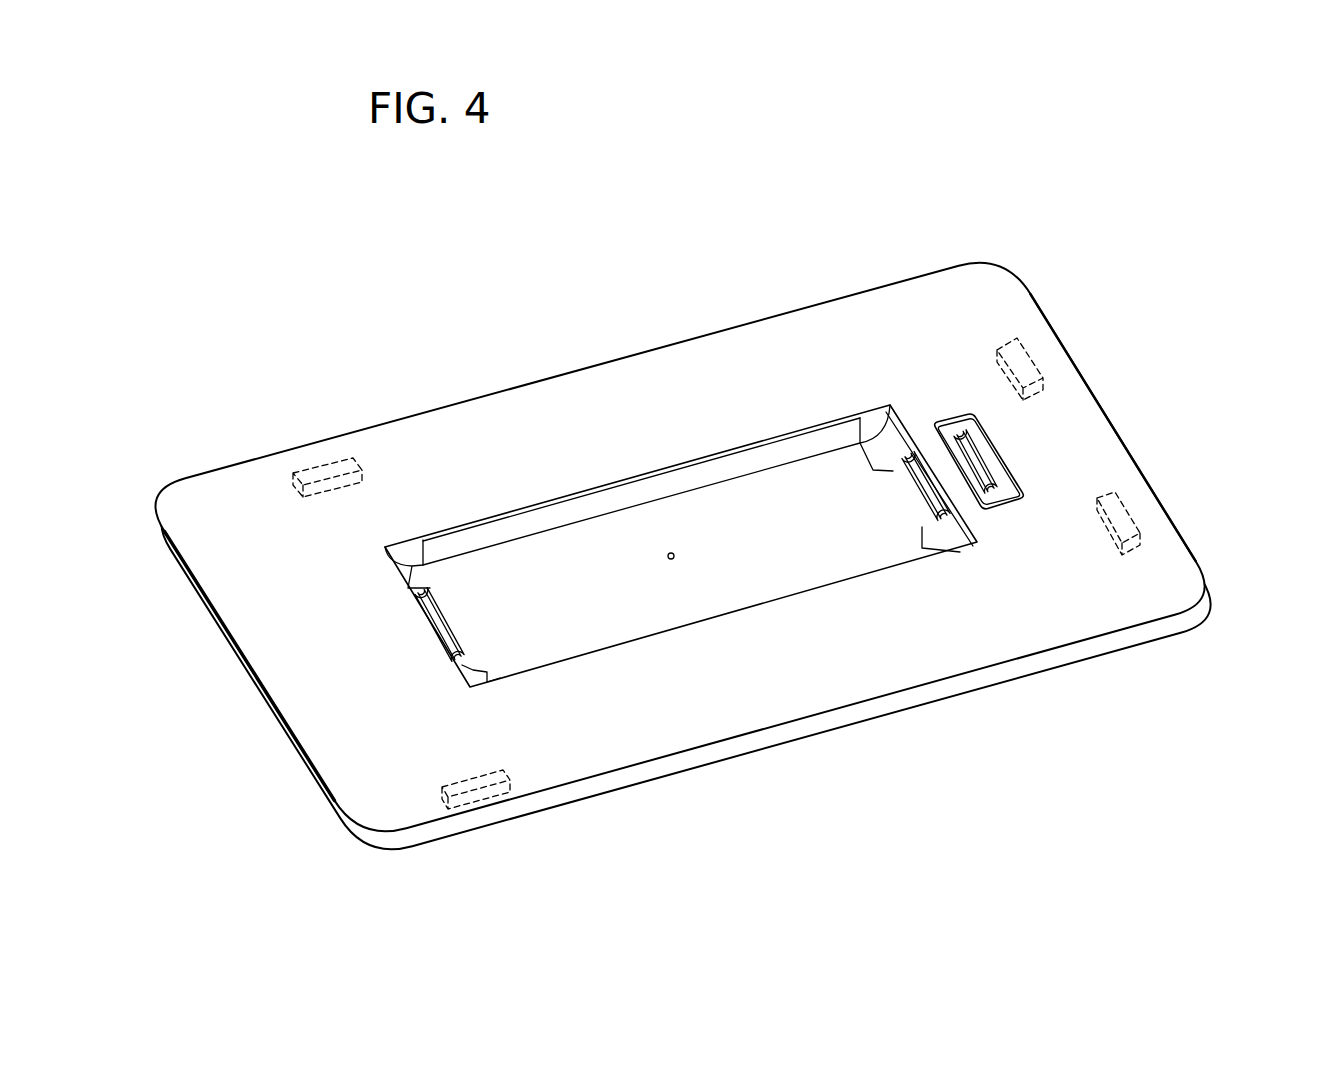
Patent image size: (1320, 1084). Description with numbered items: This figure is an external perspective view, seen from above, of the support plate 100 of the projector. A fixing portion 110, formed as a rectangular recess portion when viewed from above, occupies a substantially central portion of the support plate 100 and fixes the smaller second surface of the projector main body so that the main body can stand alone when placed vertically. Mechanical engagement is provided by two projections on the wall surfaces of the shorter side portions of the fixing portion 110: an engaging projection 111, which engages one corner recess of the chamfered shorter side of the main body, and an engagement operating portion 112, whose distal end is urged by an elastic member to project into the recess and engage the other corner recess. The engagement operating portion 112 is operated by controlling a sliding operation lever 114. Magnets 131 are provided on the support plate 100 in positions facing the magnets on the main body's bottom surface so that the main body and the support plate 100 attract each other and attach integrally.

The support plate 100 is at (696, 320).
The fixing portion 110 is at (660, 592).
The engaging projection 111 is at (443, 613).
The engagement operating portion 112 is at (927, 497).
The sliding operation lever 114 is at (970, 460).
The magnets 131 is at (328, 470).